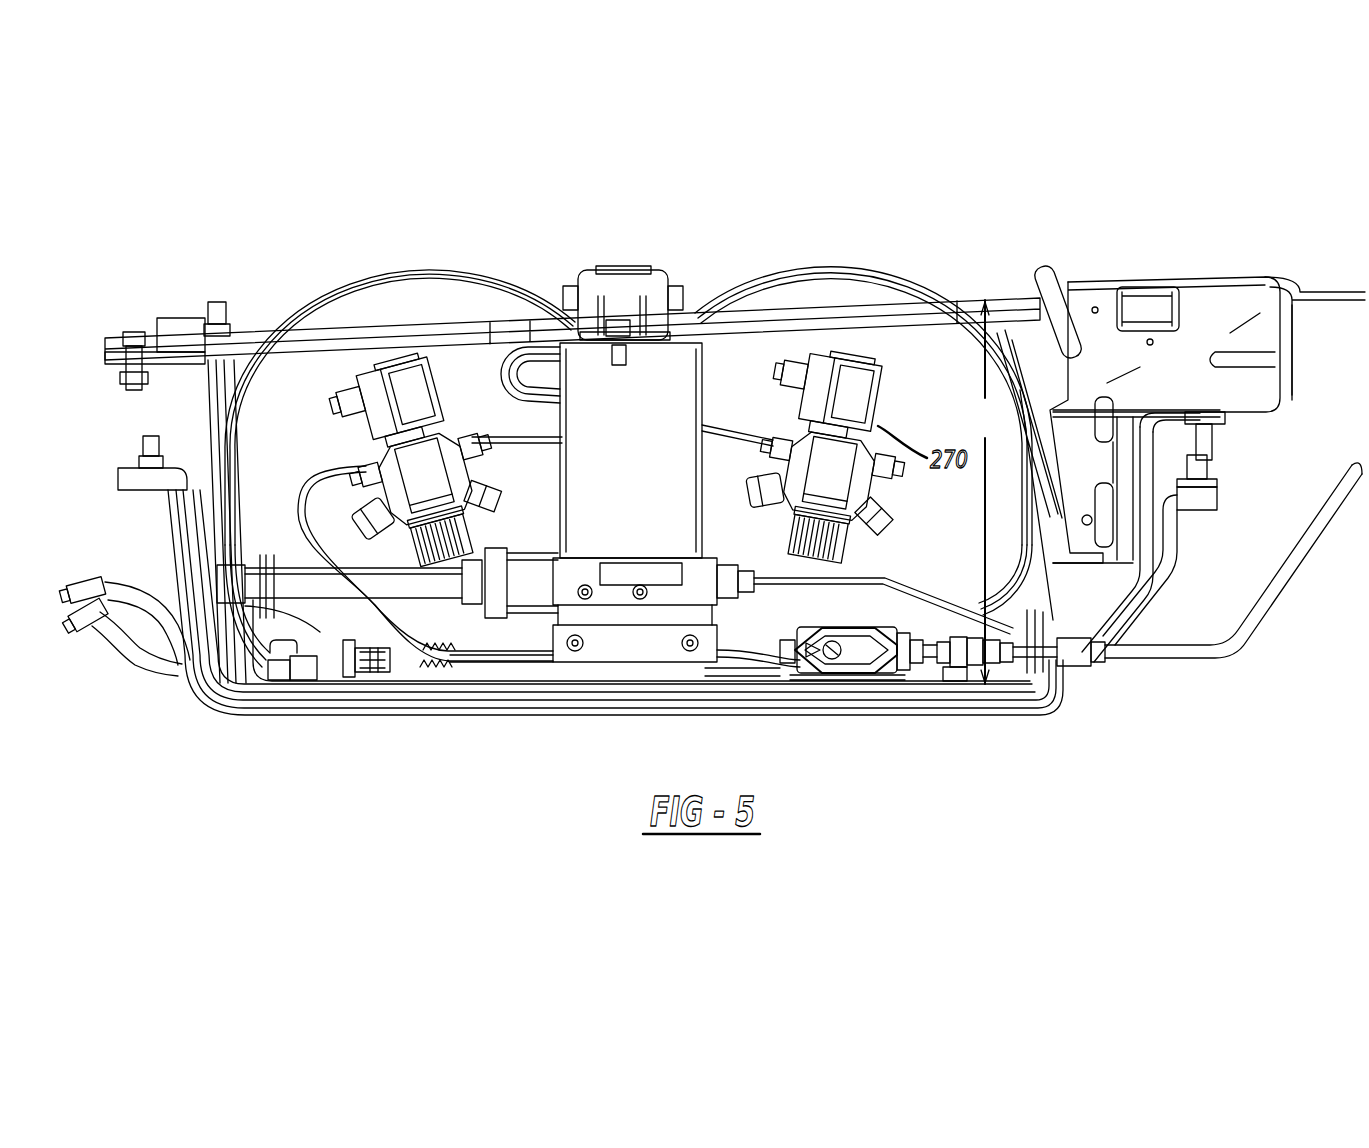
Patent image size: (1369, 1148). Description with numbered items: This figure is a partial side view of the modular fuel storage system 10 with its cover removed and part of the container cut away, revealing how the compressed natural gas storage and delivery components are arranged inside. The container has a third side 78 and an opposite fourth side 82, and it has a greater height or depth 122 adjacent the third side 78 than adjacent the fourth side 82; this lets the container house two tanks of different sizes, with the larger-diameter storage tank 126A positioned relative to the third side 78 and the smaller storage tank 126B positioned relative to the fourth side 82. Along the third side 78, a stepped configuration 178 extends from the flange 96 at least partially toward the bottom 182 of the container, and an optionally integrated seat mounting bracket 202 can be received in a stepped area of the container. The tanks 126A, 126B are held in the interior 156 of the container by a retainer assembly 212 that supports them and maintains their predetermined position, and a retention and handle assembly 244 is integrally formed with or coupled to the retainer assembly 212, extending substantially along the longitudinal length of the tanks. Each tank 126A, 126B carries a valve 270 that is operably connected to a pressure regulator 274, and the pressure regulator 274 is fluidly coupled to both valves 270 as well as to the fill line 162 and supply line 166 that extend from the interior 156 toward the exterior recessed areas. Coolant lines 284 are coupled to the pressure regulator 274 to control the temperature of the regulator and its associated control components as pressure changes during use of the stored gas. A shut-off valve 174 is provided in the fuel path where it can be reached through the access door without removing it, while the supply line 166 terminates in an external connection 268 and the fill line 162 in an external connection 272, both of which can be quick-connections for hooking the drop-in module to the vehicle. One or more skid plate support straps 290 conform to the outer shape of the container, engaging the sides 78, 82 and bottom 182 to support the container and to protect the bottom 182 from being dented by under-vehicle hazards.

The modular fuel storage system 10 is at (1073, 208).
The third side 78 is at (1140, 457).
The fourth side 82 is at (212, 408).
The flange 96 is at (1350, 295).
The height or depth 122 is at (984, 492).
The storage tank 126A is at (815, 290).
The storage tank 126B is at (414, 298).
The interior 156 is at (228, 590).
The fill line 162 is at (1020, 653).
The supply line 166 is at (345, 585).
The shut-off valve 174 is at (850, 656).
The stepped configuration 178 is at (1296, 336).
The bottom 182 is at (893, 683).
The seat mounting bracket 202 is at (1213, 305).
The retainer assembly 212 is at (586, 258).
The retention and handle assembly 244 is at (638, 268).
The external connection 268 is at (272, 628).
The valve 270 is at (386, 428).
The external connection 272 is at (1074, 656).
The pressure regulator 274 is at (530, 585).
The coolant lines 284 is at (125, 648).
The skid plate support strap 290 is at (630, 716).